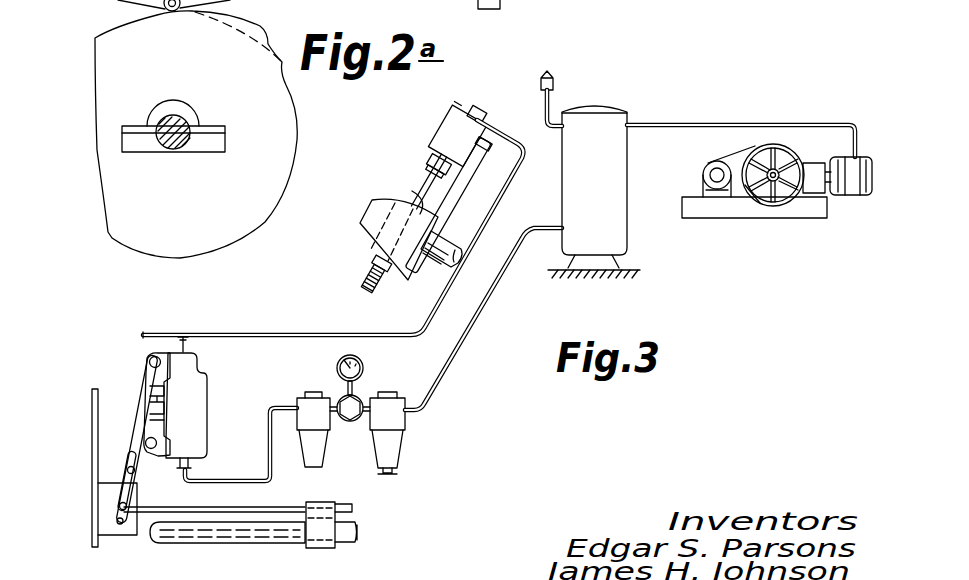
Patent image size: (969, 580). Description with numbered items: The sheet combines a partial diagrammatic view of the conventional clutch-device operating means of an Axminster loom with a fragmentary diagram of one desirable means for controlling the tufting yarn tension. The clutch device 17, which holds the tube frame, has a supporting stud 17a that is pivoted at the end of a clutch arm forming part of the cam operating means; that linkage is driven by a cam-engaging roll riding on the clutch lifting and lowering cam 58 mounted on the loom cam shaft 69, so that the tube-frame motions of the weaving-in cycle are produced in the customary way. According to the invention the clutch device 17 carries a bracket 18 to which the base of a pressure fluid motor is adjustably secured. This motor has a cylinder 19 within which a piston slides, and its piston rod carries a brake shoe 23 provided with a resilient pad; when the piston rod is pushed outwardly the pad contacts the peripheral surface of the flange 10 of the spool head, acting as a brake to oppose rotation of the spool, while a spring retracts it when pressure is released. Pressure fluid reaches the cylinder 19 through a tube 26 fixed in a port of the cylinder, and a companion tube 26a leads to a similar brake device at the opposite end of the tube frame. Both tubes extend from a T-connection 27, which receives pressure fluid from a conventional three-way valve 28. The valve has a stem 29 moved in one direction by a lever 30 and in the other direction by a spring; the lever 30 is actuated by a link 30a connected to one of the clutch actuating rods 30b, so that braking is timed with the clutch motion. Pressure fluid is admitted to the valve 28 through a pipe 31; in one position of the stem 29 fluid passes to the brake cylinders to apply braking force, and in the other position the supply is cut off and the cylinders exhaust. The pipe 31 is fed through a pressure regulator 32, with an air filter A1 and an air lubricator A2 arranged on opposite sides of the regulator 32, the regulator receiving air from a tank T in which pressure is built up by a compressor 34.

In FIG. 2A, the flange 10 is at (368, 290).
In FIG. 2A, the clutch device 17 is at (378, 210).
In FIG. 2A, the supporting stud 17a is at (440, 252).
In FIG. 2A, the bracket 18 is at (471, 181).
In FIG. 2A, the cylinder 19 is at (457, 112).
In FIG. 2A, the brake shoe 23 is at (432, 160).
In FIG. 3, the tube 26 is at (278, 333).
In FIG. 3, the tube 26a is at (150, 333).
In FIG. 3, the T-connection 27 is at (188, 334).
In FIG. 3, the three-way valve 28 is at (211, 386).
In FIG. 3, the stem 29 is at (158, 400).
In FIG. 3, the lever 30 is at (138, 414).
In FIG. 3, the link 30a is at (270, 508).
In FIG. 3, the clutch actuating rod 30b is at (280, 543).
In FIG. 3, the pipe 31 is at (221, 480).
In FIG. 3, the pressure regulator 32 is at (375, 390).
In FIG. 3, the compressor 34 is at (776, 121).
In FIG. 2A, the clutch lifting and lowering cam 58 is at (262, 222).
In FIG. 2A, the loom cam shaft 69 is at (184, 122).
In FIG. 3, the air filter A1 is at (395, 442).
In FIG. 3, the air lubricator A2 is at (325, 452).
In FIG. 3, the tank T is at (620, 172).